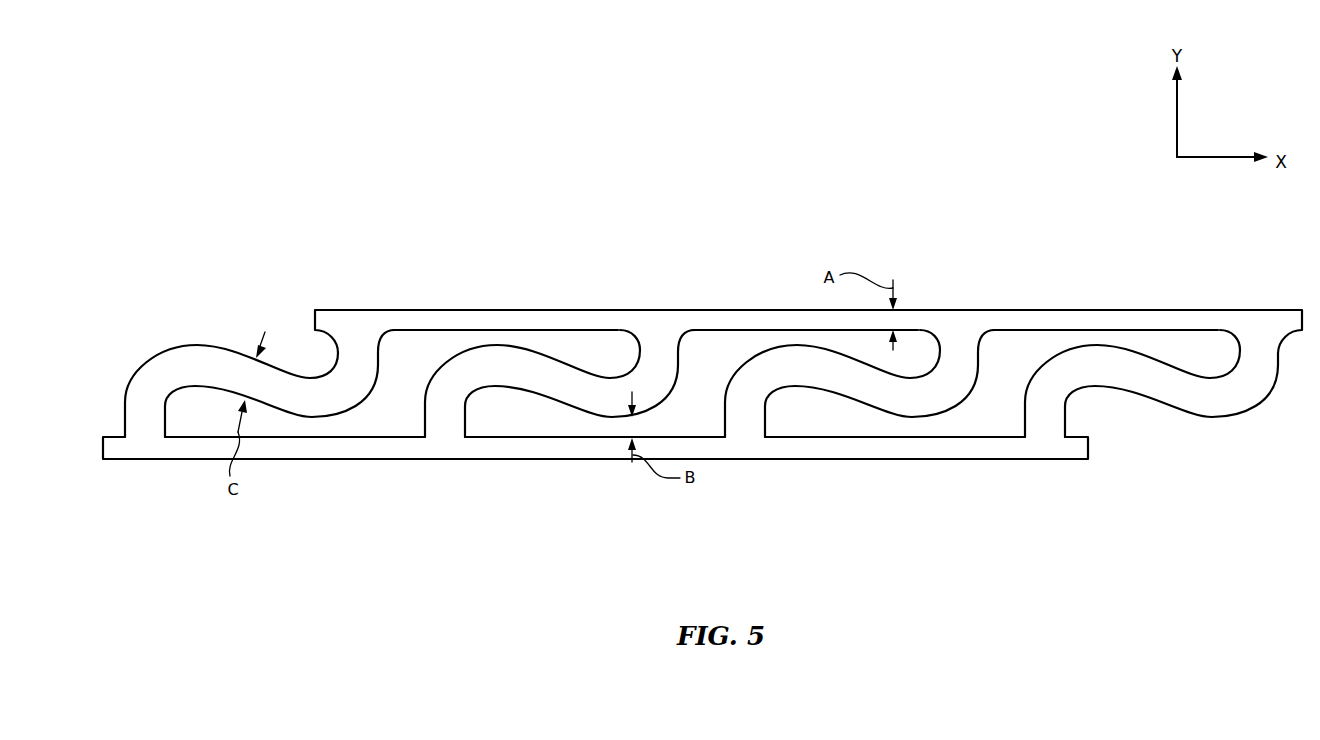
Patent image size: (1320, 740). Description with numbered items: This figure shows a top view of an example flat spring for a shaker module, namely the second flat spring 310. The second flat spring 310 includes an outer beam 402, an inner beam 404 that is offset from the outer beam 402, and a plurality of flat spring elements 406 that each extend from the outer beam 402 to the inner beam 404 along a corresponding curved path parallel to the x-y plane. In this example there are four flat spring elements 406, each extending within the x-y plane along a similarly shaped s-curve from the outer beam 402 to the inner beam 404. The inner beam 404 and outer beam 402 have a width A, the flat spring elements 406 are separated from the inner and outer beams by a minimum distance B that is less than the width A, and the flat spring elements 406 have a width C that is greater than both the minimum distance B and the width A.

The second flat spring 310 is at (211, 203).
The outer beam 402 is at (318, 450).
The inner beam 404 is at (549, 312).
The flat spring elements 406 is at (167, 362).